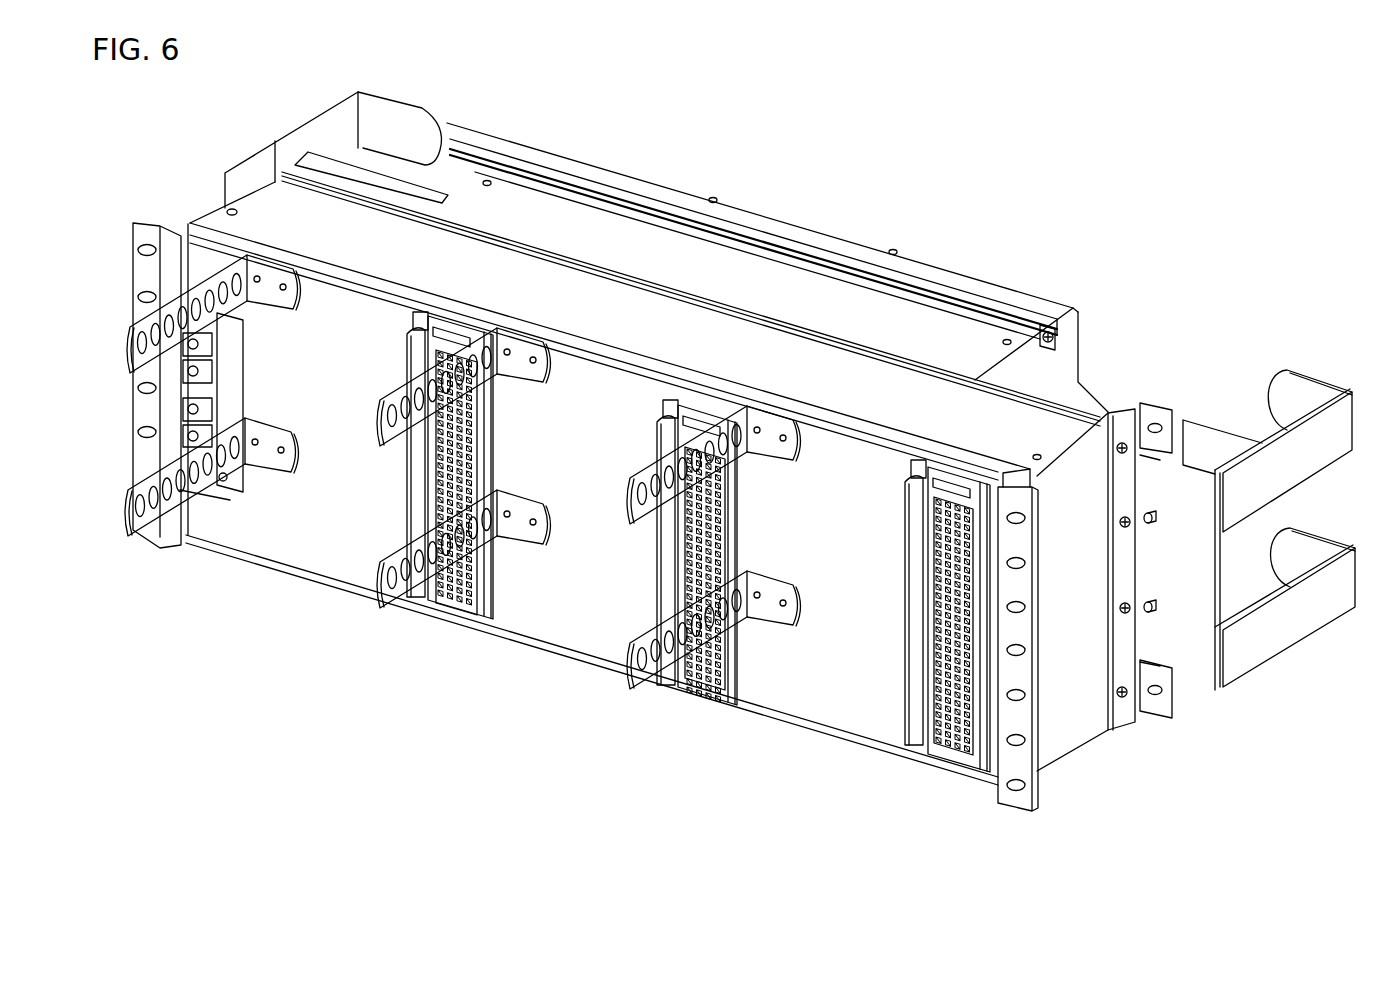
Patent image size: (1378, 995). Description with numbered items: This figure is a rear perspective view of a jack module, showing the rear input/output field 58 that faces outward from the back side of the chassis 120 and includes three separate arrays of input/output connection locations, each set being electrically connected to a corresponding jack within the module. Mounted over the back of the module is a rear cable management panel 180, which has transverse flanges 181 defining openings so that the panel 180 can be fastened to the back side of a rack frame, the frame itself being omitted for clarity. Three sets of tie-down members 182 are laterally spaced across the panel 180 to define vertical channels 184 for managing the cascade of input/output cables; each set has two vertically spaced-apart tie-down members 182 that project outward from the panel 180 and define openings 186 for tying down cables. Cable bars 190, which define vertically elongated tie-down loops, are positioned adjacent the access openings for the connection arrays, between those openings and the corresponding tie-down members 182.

The input/output field 58 is at (915, 779).
The chassis 120 is at (823, 297).
The rear cable management panel 180 is at (293, 535).
The transverse flanges 181 is at (150, 545).
The tie-down members 182 is at (148, 312).
The vertical channels 184 is at (328, 290).
The openings 186 is at (727, 582).
The cable bars 190 is at (413, 488).